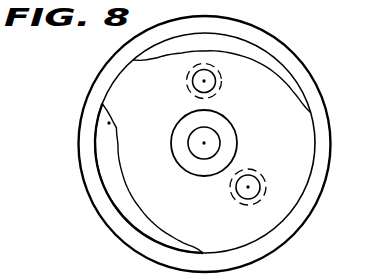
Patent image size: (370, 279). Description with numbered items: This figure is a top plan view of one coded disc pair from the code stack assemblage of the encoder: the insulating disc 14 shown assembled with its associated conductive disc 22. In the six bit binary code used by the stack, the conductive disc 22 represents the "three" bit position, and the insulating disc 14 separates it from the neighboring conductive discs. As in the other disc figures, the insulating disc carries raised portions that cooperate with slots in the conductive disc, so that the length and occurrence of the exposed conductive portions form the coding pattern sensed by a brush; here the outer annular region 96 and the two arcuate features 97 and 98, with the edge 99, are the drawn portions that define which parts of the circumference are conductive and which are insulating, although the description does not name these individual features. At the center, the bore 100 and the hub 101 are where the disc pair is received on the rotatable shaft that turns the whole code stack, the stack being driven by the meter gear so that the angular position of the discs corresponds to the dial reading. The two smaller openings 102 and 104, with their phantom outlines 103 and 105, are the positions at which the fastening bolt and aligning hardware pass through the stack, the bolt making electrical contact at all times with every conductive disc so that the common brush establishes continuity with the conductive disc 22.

The insulating disc 14 is at (309, 69).
The conductive disc 22 is at (166, 130).
The annular ring 96 is at (292, 95).
The first arcuate lug 97 is at (115, 193).
The second arcuate lug 98 is at (266, 80).
The arcuate slot edge 99 is at (142, 210).
The central bore 100 is at (199, 149).
The hub 101 is at (199, 173).
The pin hole 102 is at (245, 196).
The pin boss (phantom) 103 is at (260, 173).
The pin hole 104 is at (198, 91).
The pin boss (phantom) 105 is at (188, 80).